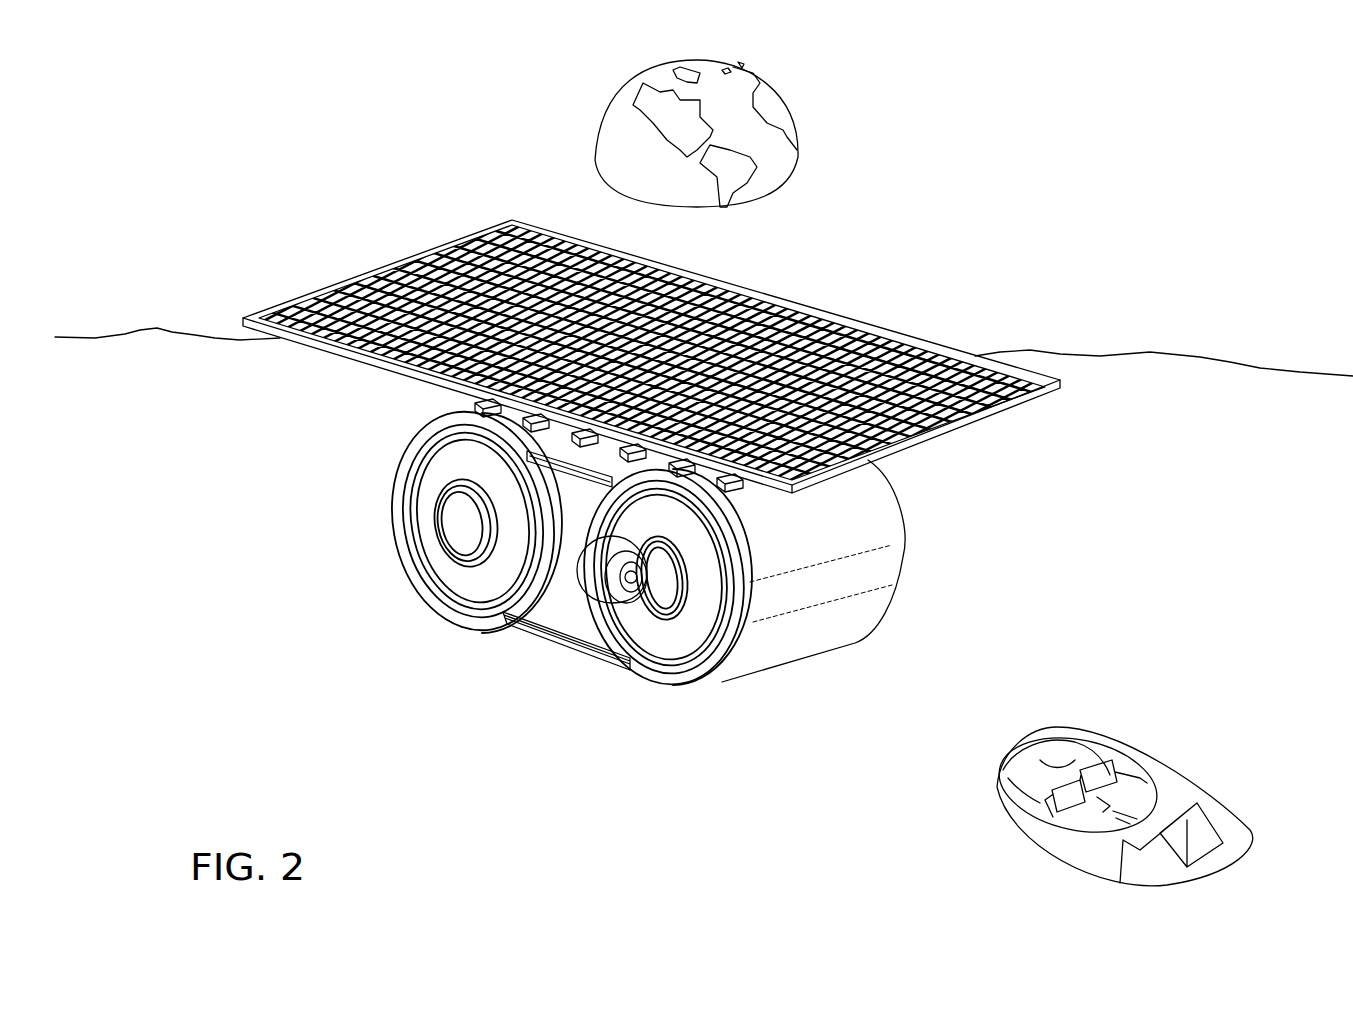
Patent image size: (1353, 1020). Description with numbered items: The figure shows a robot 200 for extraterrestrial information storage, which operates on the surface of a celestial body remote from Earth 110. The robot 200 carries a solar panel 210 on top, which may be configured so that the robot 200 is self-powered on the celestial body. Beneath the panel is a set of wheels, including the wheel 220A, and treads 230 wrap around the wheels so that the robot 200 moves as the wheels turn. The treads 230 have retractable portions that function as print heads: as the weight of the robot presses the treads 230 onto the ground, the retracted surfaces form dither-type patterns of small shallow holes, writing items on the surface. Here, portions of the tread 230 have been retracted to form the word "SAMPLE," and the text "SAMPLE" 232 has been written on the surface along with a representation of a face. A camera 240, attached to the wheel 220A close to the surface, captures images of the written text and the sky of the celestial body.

The Earth 110 is at (607, 112).
The robot 200 is at (390, 228).
The solar panel 210 is at (292, 303).
The wheel 220A is at (400, 468).
The treads 230 is at (902, 517).
The text "SAMPLE" 232 is at (1033, 678).
The camera 240 is at (590, 593).